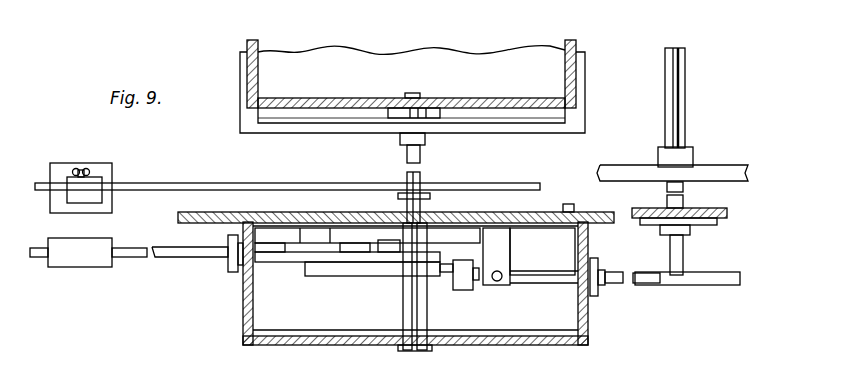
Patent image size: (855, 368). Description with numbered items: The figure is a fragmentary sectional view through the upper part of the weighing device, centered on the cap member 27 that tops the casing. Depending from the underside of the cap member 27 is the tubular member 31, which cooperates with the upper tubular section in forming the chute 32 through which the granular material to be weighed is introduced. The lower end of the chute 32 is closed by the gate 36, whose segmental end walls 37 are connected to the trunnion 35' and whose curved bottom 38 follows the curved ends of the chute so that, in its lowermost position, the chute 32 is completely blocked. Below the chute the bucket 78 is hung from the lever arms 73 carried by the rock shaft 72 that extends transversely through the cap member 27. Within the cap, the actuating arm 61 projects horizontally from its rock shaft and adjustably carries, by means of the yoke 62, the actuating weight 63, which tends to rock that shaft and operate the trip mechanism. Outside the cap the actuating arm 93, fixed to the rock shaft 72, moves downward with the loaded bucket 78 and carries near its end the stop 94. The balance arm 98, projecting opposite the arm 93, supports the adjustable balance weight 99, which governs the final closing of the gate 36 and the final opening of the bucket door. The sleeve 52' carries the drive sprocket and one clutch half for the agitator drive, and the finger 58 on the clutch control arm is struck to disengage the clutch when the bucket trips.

The cap member 27 is at (328, 214).
The tubular member 31 is at (487, 101).
The chute 32 is at (401, 59).
The trunnion 35' is at (432, 178).
The gate 36 is at (357, 112).
The segmental end walls 37 is at (325, 116).
The bottom 38 is at (438, 110).
The sleeve 52' is at (437, 287).
The finger 58 is at (341, 223).
The actuating arm 61 is at (231, 182).
The yoke 62 is at (90, 191).
The actuating weight 63 is at (58, 168).
The rock shaft 72 is at (685, 106).
The lever arms 73 is at (618, 168).
The bucket 78 is at (586, 110).
The actuating arm 93 is at (624, 282).
The stop 94 is at (463, 262).
The balance arm 98 is at (190, 250).
The balance weight 99 is at (80, 262).